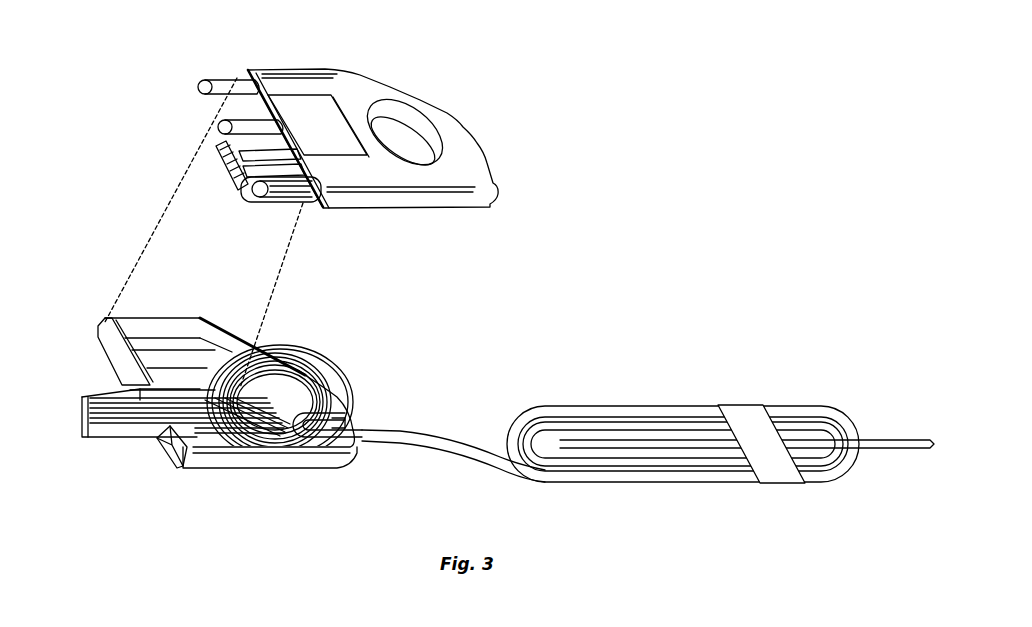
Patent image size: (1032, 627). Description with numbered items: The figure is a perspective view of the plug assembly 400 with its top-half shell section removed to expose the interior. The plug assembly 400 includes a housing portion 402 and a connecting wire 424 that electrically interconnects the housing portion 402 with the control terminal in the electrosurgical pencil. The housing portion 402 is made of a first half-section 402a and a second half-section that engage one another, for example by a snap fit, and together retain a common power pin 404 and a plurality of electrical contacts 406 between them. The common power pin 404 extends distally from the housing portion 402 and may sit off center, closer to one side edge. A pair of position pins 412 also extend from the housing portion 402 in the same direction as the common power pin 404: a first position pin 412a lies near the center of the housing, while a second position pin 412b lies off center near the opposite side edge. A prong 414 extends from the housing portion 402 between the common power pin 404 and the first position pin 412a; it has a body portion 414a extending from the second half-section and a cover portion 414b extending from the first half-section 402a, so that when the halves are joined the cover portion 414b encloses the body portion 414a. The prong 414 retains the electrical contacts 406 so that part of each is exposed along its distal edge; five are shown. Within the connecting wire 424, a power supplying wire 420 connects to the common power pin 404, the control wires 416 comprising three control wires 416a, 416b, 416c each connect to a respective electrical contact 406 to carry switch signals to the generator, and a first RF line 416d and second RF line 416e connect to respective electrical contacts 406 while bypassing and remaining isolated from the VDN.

The plug assembly 400 is at (546, 333).
The housing portion 402 is at (410, 85).
The first half-section 402a is at (470, 124).
The common power pin 404 is at (290, 183).
The electrical contacts 406 is at (92, 415).
The position pins 412 is at (184, 52).
The first position pin 412a is at (208, 85).
The second position pin 412b is at (220, 125).
The prong 414 is at (93, 432).
The body portion 414a is at (110, 449).
The cover portion 414b is at (228, 172).
The control wires 416 is at (174, 398).
The first control wire 416a is at (236, 342).
The second control wire 416b is at (250, 348).
The third control wire 416c is at (262, 360).
The first RF line 416d is at (278, 369).
The second RF line 416e is at (296, 386).
The power supplying wire 420 is at (238, 460).
The connecting wire 424 is at (399, 431).